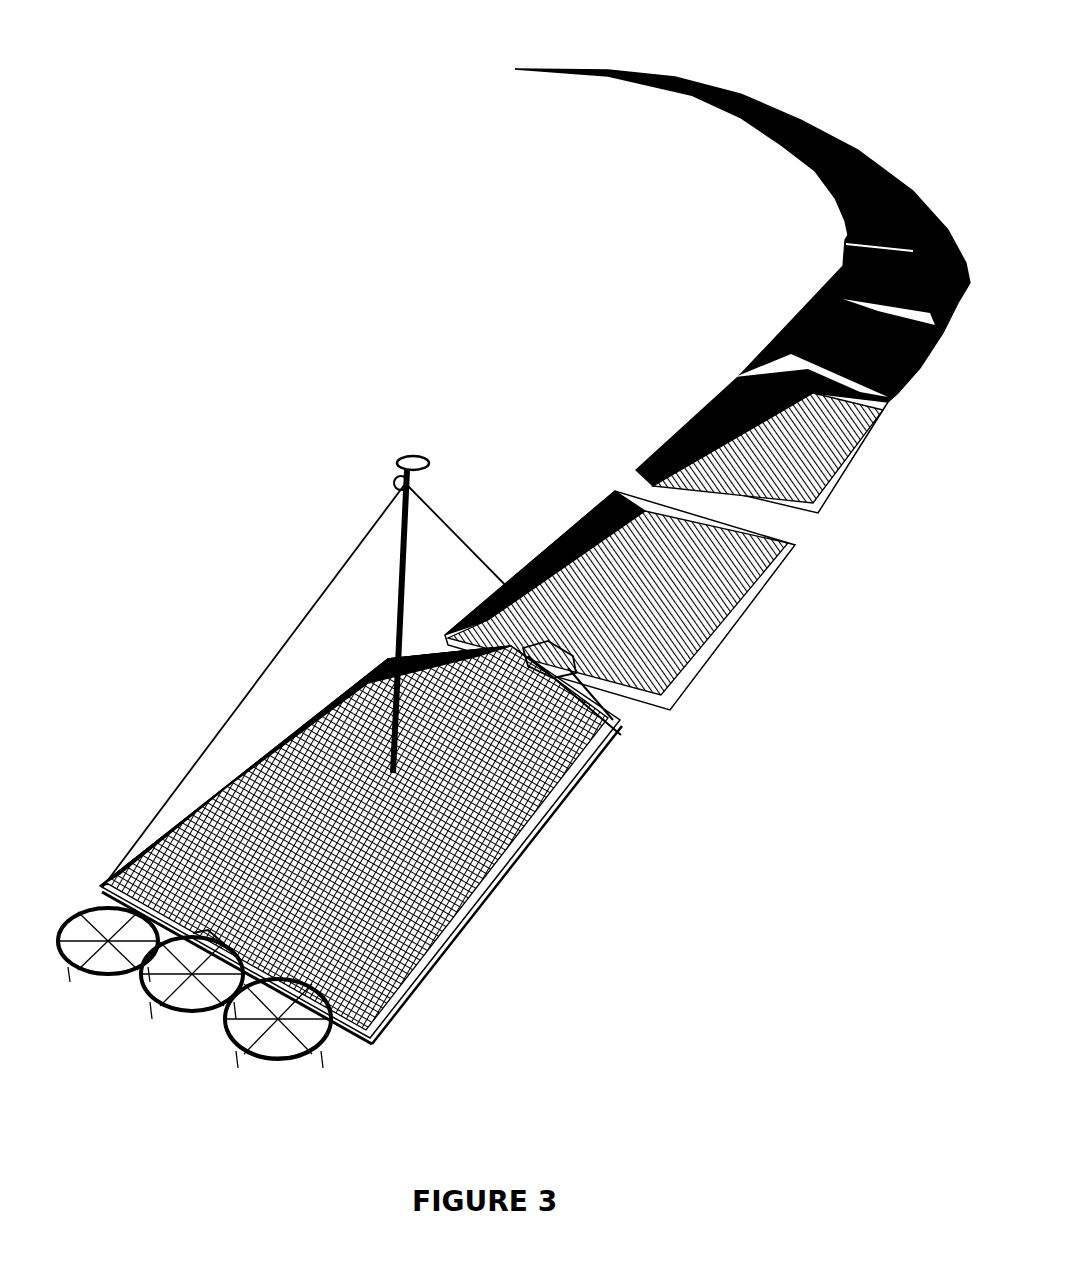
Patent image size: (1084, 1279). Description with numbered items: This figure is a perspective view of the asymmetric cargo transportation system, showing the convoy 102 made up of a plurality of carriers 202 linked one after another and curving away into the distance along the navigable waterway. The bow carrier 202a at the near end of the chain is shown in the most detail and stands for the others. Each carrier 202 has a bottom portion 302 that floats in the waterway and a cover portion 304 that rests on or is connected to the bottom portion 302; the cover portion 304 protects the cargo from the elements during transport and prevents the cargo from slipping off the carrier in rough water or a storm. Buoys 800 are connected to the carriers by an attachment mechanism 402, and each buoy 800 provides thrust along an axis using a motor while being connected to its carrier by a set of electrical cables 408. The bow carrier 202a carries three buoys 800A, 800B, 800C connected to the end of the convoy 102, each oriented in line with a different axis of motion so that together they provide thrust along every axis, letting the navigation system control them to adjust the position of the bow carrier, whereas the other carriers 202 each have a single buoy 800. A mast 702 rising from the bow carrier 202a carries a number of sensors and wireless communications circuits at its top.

The convoy 102 is at (396, 339).
The carrier 202 is at (838, 229).
The bow carrier 202a is at (427, 1005).
The bottom portion 302 is at (478, 914).
The cover portion 304 is at (601, 716).
The attachment mechanism 402 is at (545, 625).
The set of electrical cables 408 is at (190, 928).
The mast 702 is at (372, 452).
The buoy 800 is at (513, 650).
The first buoy 800A is at (87, 932).
The second buoy 800B is at (178, 972).
The third buoy 800C is at (271, 1013).